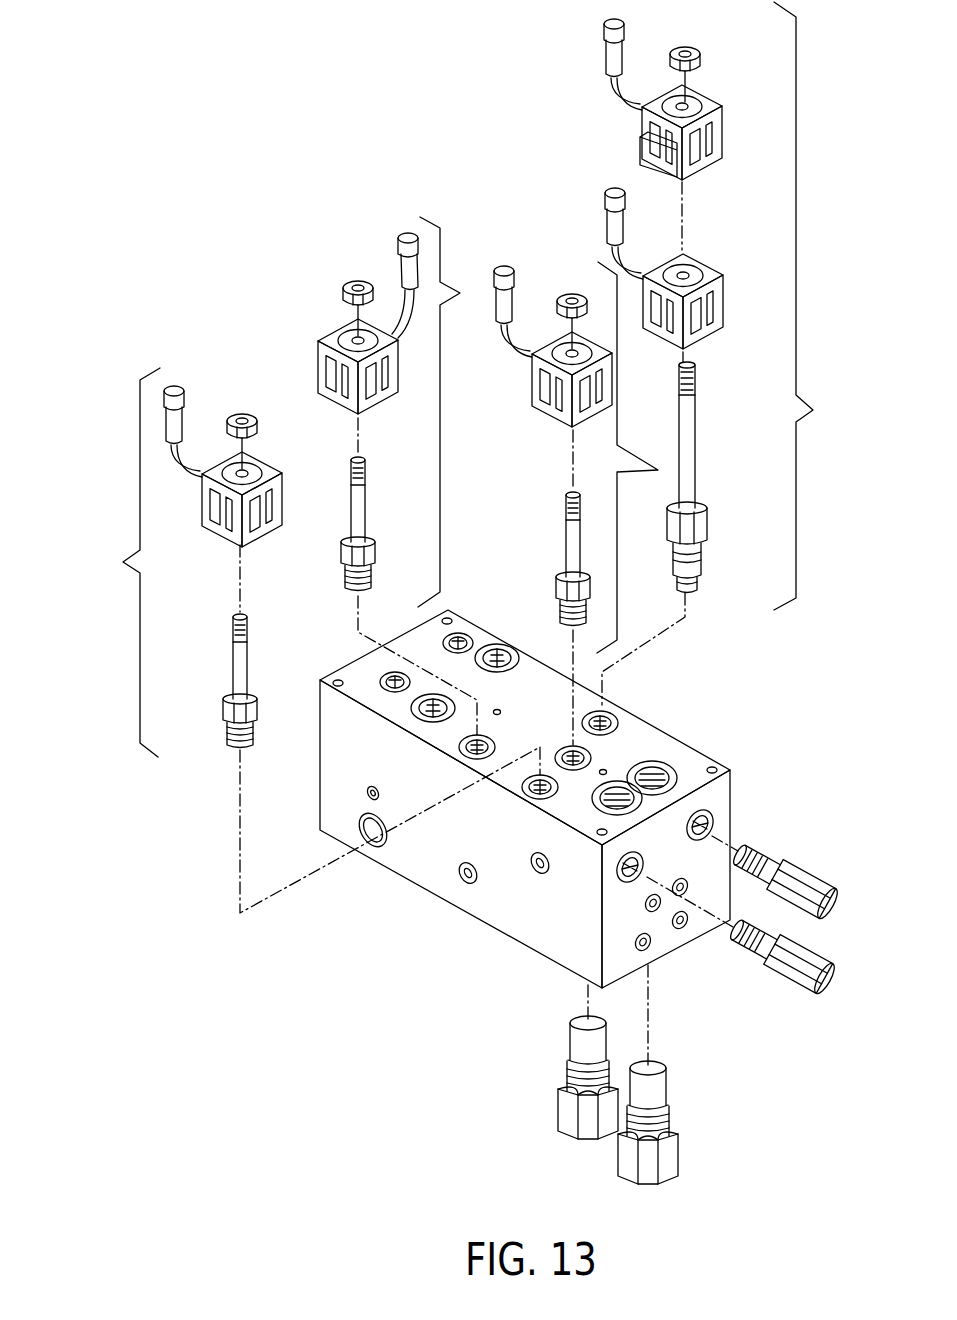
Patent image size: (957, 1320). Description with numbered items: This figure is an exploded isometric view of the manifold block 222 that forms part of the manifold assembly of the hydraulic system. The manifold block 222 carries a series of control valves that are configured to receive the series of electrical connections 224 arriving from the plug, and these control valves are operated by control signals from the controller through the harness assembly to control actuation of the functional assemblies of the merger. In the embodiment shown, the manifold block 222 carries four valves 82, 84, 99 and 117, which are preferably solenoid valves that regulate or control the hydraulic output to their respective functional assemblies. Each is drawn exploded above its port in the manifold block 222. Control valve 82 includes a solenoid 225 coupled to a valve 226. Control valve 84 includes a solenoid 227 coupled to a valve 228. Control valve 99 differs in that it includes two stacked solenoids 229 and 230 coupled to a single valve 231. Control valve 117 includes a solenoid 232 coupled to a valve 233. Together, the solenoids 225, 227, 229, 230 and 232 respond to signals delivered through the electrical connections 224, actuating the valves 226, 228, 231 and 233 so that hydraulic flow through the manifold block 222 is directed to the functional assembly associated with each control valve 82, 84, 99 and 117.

The control valve 82 is at (123, 562).
The control valve 84 is at (658, 470).
The control valve 99 is at (813, 410).
The control valve 117 is at (460, 293).
The manifold block 222 is at (342, 1035).
The electrical connections 224 is at (219, 278).
The solenoid 225 is at (185, 500).
The valve 226 is at (222, 700).
The solenoid 227 is at (525, 380).
The valve 228 is at (562, 550).
The solenoid 229 is at (725, 130).
The solenoid 230 is at (725, 302).
The valve 231 is at (697, 458).
The solenoid 232 is at (323, 370).
The valve 233 is at (343, 517).